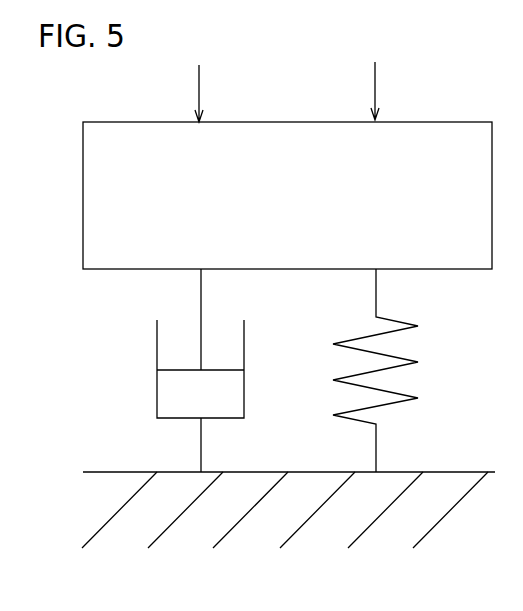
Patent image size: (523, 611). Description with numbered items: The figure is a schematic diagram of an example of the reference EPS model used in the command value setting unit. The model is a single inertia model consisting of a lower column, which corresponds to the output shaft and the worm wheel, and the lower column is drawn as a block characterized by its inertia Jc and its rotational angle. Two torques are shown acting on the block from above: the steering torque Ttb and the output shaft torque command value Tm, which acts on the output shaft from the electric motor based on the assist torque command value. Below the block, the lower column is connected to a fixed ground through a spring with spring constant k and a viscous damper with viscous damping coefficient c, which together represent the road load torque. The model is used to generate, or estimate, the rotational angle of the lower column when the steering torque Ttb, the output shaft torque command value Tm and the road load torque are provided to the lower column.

The viscous damping coefficient c is at (186, 370).
The spring constant k is at (388, 370).
The steering torque Ttb is at (195, 77).
The output shaft torque command value Tm is at (382, 74).
The inertia of the lower column Jc is at (287, 195).